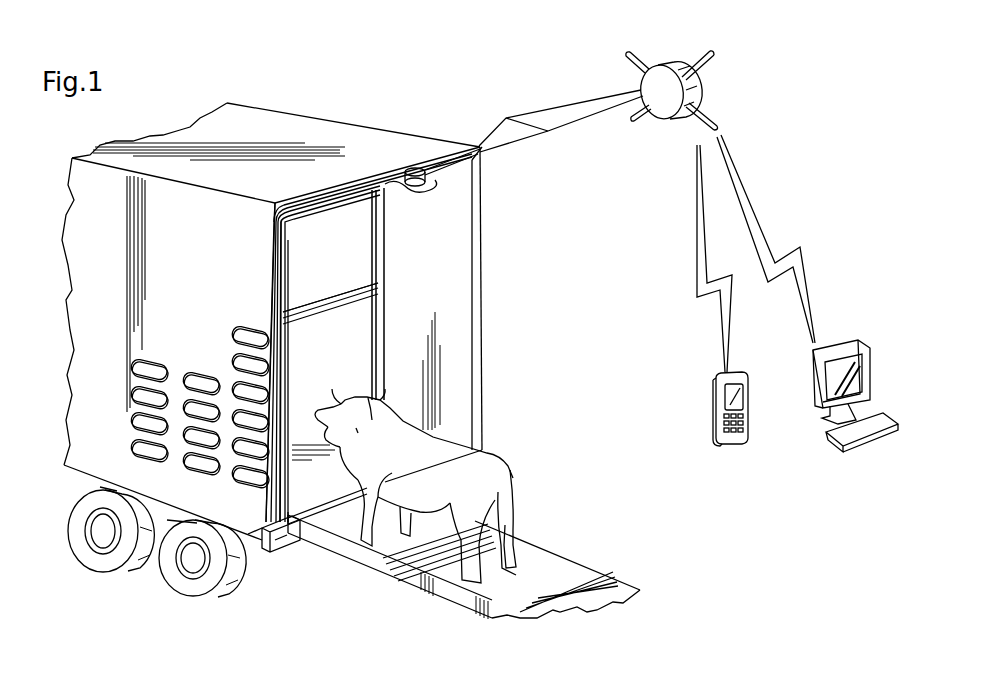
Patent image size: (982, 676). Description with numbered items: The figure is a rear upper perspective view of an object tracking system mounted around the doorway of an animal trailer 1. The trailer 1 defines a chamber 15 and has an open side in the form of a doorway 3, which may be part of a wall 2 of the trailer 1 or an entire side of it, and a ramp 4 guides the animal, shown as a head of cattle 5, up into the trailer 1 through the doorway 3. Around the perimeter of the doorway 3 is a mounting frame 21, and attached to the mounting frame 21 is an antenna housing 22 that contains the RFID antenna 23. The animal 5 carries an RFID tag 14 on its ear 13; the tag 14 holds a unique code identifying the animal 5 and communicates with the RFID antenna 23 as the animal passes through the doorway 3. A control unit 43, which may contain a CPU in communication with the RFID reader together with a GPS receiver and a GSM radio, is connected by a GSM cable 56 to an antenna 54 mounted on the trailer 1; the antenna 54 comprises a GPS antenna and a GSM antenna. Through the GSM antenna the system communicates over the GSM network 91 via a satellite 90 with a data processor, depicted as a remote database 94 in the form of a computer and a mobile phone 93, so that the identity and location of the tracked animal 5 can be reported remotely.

The animal trailer 1 is at (282, 118).
The wall 2 is at (462, 205).
The doorway 3 is at (338, 215).
The ramp 4 is at (565, 570).
The head of cattle 5 is at (490, 458).
The ear 13 is at (343, 448).
The RFID tag 14 is at (331, 426).
The chamber 15 is at (312, 342).
The mounting frame 21 is at (382, 278).
The antenna housing 22 is at (382, 292).
The RFID antenna 23 is at (267, 540).
The control unit 43 is at (280, 545).
The antenna 54 is at (418, 170).
The GSM cable 56 is at (250, 534).
The satellite 90 is at (678, 65).
The GSM network 91 is at (592, 100).
The mobile phone 93 is at (733, 446).
The remote database 94 is at (848, 340).